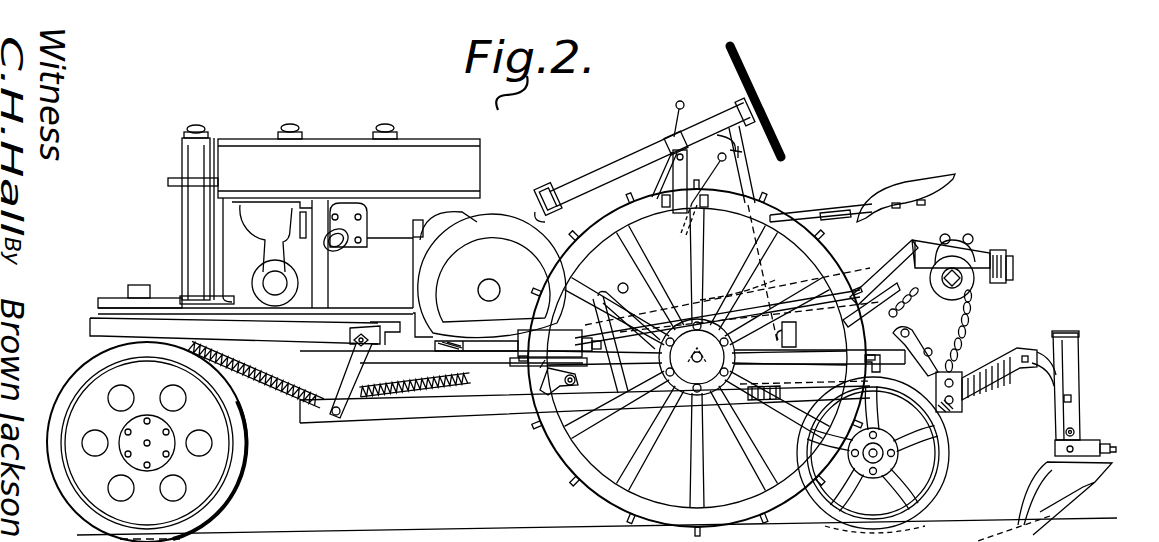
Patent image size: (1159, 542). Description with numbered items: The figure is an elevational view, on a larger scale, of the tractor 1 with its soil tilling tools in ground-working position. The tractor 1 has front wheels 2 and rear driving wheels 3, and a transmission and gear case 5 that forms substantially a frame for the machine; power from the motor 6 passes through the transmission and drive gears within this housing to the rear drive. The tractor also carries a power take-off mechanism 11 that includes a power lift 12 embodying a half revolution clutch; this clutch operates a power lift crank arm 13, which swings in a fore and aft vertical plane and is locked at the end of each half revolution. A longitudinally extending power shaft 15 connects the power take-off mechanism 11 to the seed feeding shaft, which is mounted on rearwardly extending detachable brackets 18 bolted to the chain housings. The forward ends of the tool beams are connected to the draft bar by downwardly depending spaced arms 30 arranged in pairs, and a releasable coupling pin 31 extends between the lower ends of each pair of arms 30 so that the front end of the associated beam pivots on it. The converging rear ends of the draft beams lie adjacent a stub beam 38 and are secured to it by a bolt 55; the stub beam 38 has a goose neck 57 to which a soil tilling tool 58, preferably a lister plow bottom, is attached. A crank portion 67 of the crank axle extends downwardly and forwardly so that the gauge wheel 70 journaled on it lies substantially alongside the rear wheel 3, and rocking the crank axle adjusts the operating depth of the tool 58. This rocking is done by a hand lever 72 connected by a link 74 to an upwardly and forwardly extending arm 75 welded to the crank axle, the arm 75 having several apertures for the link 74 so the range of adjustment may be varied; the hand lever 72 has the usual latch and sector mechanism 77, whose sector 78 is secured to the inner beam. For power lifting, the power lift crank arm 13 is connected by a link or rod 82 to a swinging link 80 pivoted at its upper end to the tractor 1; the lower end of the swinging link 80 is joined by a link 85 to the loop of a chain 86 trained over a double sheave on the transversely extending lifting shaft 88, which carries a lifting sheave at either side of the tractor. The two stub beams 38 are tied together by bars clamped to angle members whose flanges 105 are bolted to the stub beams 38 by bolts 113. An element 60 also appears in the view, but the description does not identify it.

The tractor 1 is at (544, 155).
The front wheels 2 is at (72, 386).
The rear driving wheels 3 is at (776, 218).
The transmission and gear case 5 is at (568, 231).
The motor 6 is at (350, 267).
The power take-off mechanism 11 is at (556, 342).
The power lift 12 is at (530, 390).
The power lift crank arm 13 is at (545, 394).
The longitudinally extending power shaft 15 is at (838, 270).
The rearwardly extending detachable brackets 18 is at (882, 266).
The downwardly depending spaced arms 30 is at (346, 378).
The releasable coupling pin 31 is at (340, 420).
The stub beam 38 is at (1045, 358).
The bolt 55 is at (1026, 350).
The goose neck 57 is at (1070, 511).
The soil tilling tool 58 is at (1093, 472).
The hitch bracket 60 is at (965, 400).
The crank portion 67 is at (902, 440).
The gauge wheel 70 is at (949, 462).
The hand lever 72 is at (749, 183).
The link 74 is at (886, 348).
The upwardly and forwardly extending arm 75 is at (914, 326).
The latch and sector mechanism 77 is at (770, 282).
The sector 78 is at (797, 340).
The swinging link 80 is at (692, 396).
The link or rod 82 is at (585, 396).
The link 85 is at (890, 313).
The chain 86 is at (972, 322).
The transversely extending lifting shaft 88 is at (985, 285).
The flanges 105 is at (1068, 380).
The bolts 113 is at (1074, 432).